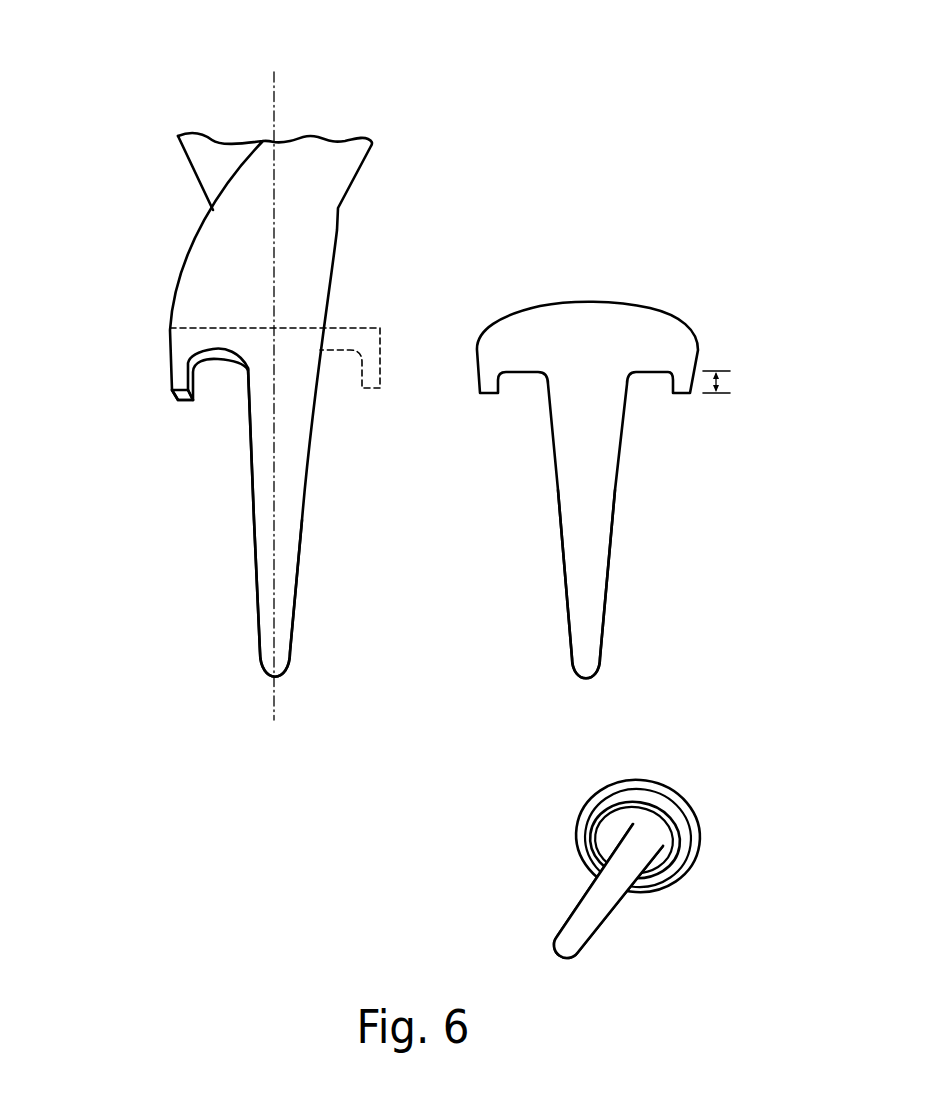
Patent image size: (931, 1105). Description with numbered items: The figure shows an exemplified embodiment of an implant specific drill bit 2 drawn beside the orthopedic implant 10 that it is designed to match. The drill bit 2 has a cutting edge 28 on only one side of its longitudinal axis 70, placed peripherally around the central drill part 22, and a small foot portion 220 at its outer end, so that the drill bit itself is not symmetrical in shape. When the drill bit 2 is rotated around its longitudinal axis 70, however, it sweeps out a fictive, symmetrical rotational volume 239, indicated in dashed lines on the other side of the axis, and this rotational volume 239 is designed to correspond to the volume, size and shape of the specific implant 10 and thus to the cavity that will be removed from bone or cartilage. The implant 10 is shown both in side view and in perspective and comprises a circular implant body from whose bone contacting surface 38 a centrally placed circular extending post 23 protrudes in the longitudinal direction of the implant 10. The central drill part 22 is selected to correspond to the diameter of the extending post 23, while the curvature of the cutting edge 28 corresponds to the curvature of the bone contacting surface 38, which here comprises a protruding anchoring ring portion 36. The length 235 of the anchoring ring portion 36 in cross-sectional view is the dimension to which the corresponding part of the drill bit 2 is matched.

The implant specific drill bit 2 is at (126, 271).
The orthopedic implant 10 is at (662, 622).
The central drill part 22 is at (290, 573).
The extending post 23 is at (595, 552).
The cutting edge 28 is at (218, 362).
The anchoring ring portion 36 is at (683, 838).
The bone contacting surface 38 is at (713, 927).
The longitudinal axis 70 is at (274, 79).
The foot / lug of femoral component 220 is at (177, 373).
The length 235 is at (718, 382).
The rotational volume 239 is at (369, 336).